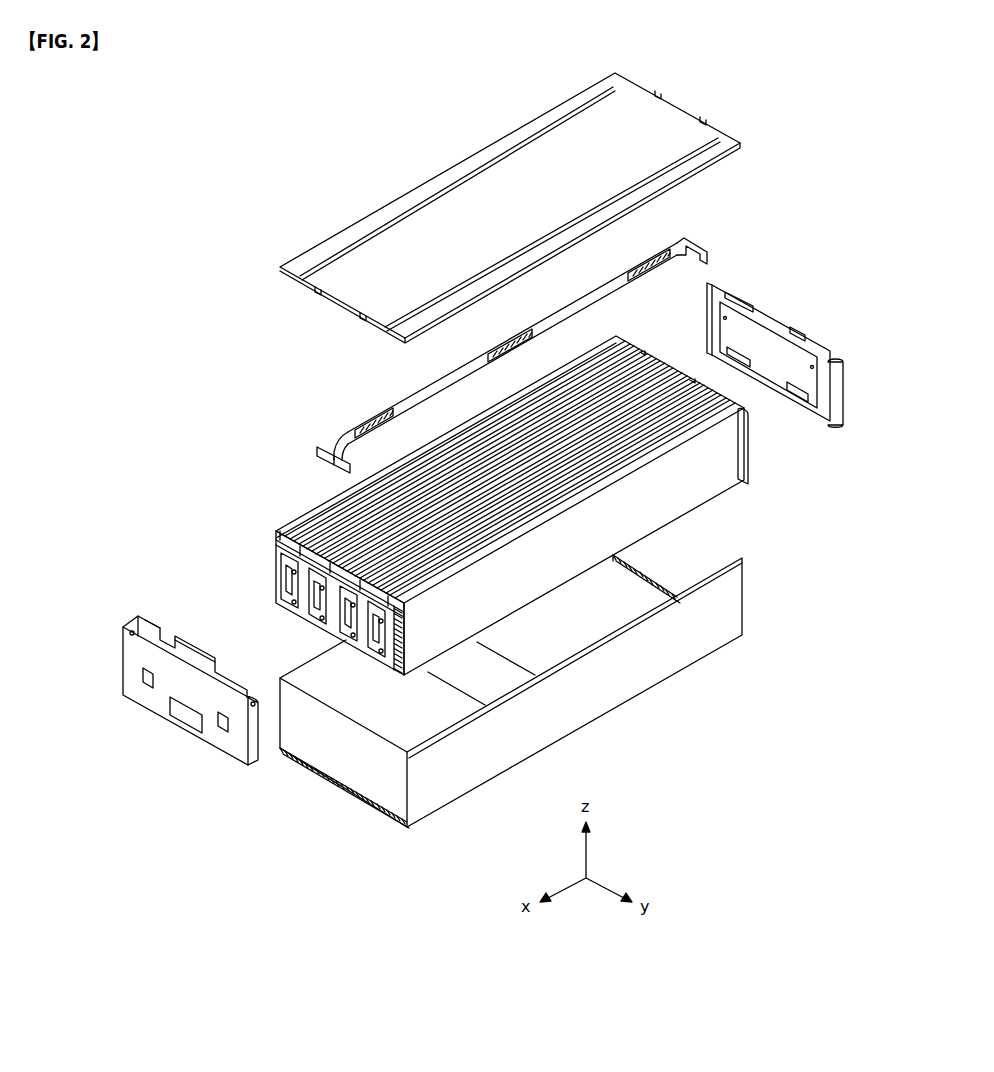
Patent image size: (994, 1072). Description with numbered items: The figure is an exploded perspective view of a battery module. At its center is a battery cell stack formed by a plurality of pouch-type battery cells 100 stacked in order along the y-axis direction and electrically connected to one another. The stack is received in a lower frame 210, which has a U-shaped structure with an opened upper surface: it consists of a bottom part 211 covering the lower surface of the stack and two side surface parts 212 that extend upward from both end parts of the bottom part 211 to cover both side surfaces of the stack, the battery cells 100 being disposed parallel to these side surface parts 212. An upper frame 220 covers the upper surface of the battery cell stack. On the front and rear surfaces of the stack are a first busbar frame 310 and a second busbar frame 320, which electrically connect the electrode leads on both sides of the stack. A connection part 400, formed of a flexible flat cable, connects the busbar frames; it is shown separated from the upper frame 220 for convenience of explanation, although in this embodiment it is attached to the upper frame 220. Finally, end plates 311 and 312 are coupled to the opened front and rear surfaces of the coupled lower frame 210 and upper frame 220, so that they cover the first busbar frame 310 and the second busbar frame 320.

The battery cell 100 is at (690, 488).
The lower frame 210 is at (482, 714).
The bottom part 211 is at (302, 758).
The side surface part 212 is at (423, 777).
The upper frame 220 is at (450, 177).
The first busbar frame 310 is at (285, 582).
The end plate 311 is at (232, 742).
The end plate 312 is at (768, 318).
The second busbar frame 320 is at (747, 443).
The connection part 400 is at (357, 428).